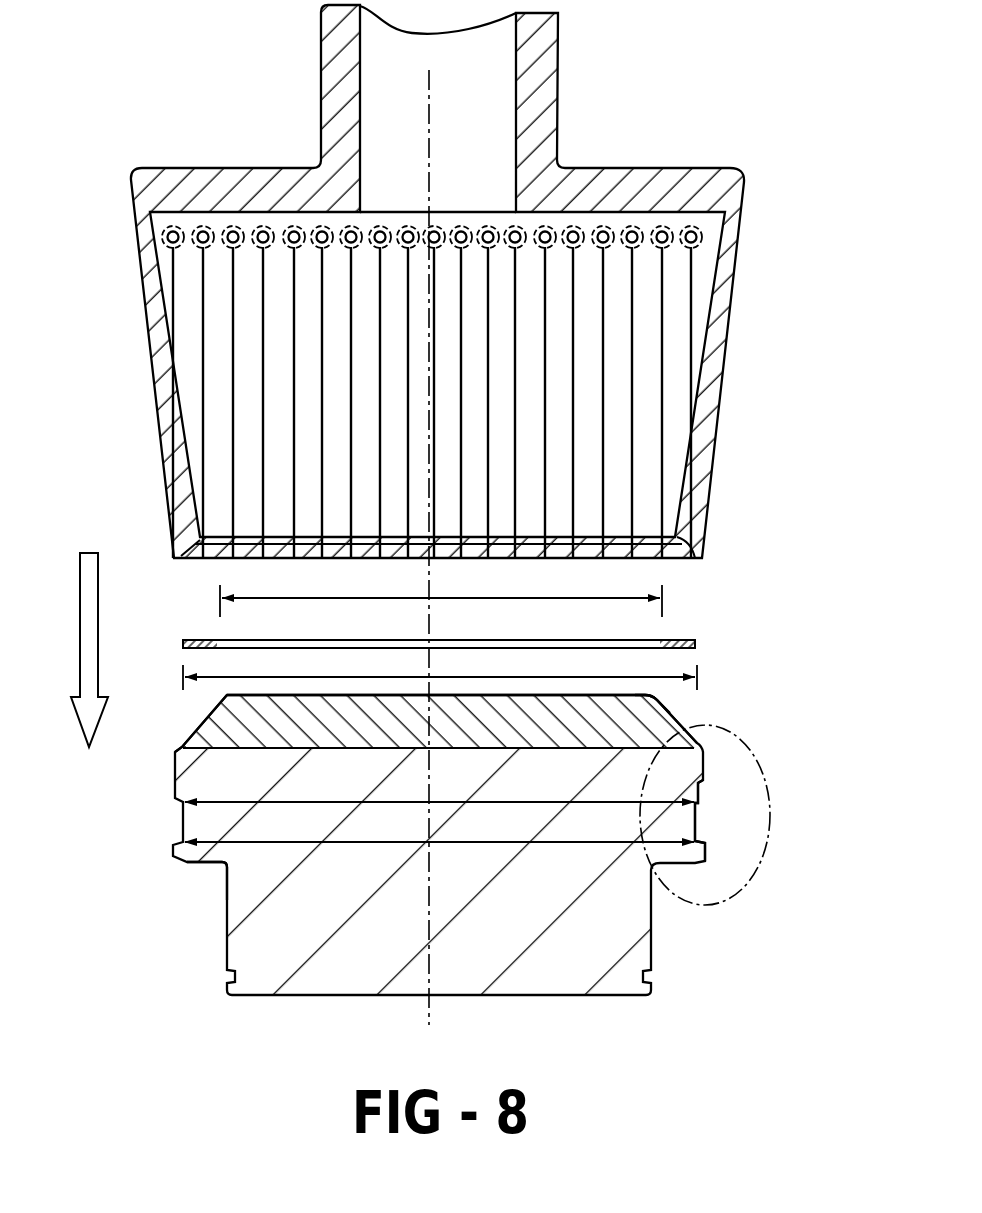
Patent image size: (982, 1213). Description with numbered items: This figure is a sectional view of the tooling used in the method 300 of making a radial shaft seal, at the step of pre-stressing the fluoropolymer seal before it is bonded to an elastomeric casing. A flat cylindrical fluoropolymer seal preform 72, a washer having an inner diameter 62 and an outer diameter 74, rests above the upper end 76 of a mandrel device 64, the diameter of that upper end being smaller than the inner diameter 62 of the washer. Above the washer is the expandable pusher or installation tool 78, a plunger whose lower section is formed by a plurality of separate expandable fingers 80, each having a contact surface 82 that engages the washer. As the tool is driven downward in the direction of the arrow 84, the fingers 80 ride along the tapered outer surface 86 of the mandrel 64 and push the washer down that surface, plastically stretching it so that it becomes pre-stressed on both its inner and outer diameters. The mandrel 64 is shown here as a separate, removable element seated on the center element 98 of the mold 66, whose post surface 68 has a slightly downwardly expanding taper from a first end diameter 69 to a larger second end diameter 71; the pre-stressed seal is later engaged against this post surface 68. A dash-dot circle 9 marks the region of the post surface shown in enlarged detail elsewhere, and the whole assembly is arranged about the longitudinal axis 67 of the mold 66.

The method 300 is at (155, 125).
The expandable pusher or installation tool 78 is at (731, 294).
The expandable fingers 80 is at (677, 391).
The contact surface 82 is at (695, 522).
The inner diameter 62 is at (245, 598).
The fluoropolymer seal preform 72 is at (692, 640).
The outer diameter 74 is at (222, 677).
The upper end of the mandrel 76 is at (227, 694).
The tapered outer surface 86 is at (662, 704).
The mandrel device 64 is at (660, 718).
The detail region of FIG. 9 is at (780, 803).
The post surface 68 is at (700, 820).
The first end diameter 69 is at (300, 802).
The second end diameter 71 is at (384, 842).
The mold 66 is at (227, 888).
The center element 98 is at (270, 945).
The longitudinal axis 67 is at (429, 1003).
The arrow 84 is at (80, 630).